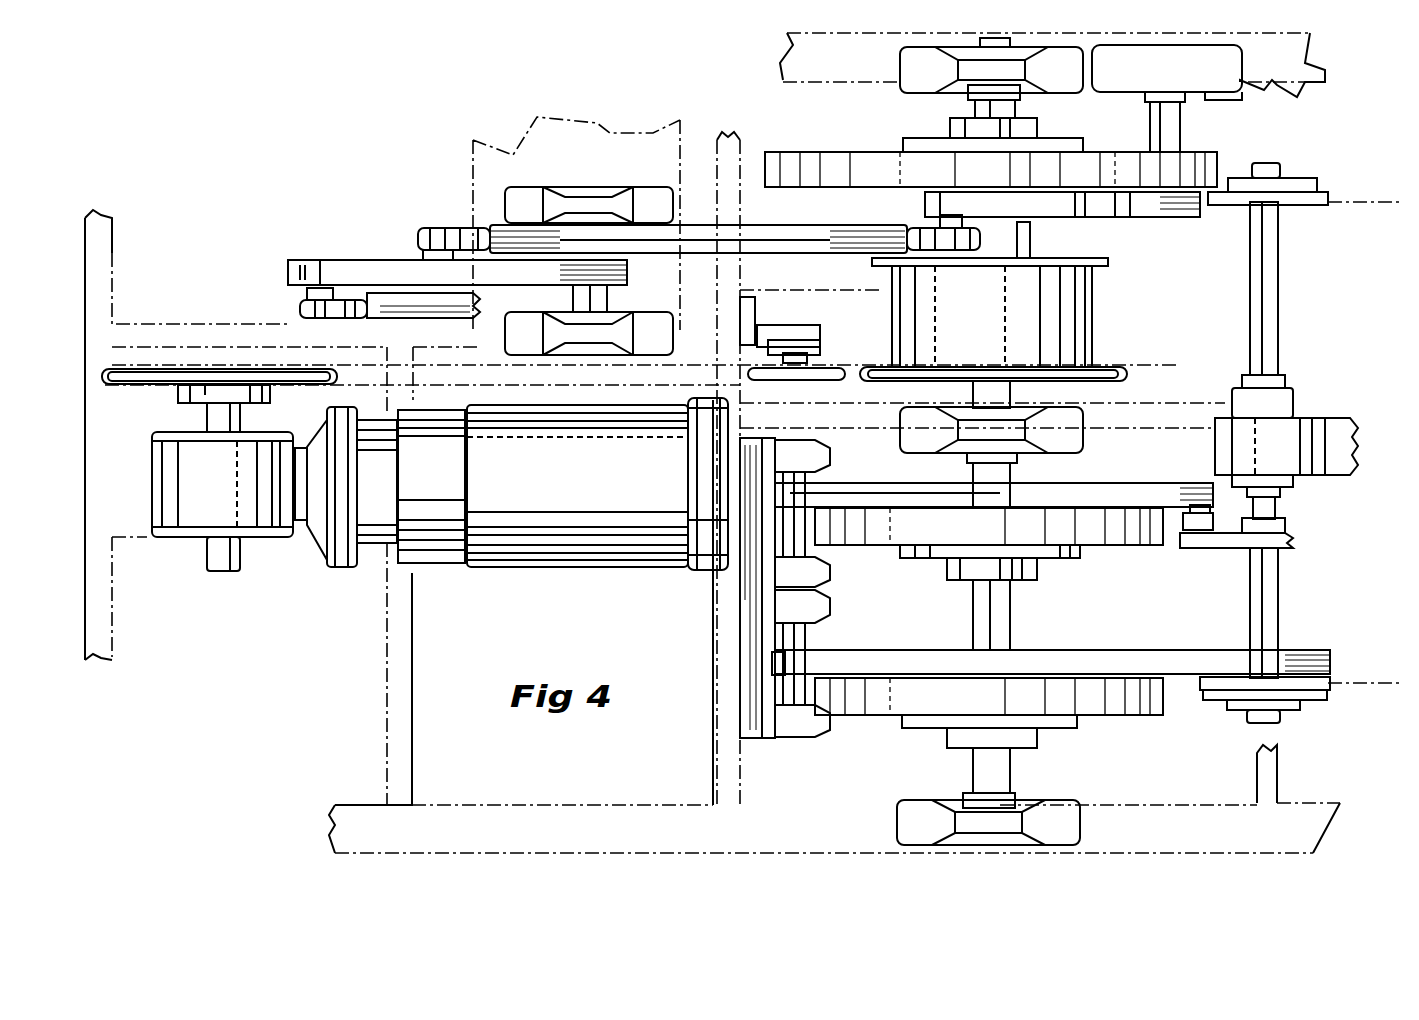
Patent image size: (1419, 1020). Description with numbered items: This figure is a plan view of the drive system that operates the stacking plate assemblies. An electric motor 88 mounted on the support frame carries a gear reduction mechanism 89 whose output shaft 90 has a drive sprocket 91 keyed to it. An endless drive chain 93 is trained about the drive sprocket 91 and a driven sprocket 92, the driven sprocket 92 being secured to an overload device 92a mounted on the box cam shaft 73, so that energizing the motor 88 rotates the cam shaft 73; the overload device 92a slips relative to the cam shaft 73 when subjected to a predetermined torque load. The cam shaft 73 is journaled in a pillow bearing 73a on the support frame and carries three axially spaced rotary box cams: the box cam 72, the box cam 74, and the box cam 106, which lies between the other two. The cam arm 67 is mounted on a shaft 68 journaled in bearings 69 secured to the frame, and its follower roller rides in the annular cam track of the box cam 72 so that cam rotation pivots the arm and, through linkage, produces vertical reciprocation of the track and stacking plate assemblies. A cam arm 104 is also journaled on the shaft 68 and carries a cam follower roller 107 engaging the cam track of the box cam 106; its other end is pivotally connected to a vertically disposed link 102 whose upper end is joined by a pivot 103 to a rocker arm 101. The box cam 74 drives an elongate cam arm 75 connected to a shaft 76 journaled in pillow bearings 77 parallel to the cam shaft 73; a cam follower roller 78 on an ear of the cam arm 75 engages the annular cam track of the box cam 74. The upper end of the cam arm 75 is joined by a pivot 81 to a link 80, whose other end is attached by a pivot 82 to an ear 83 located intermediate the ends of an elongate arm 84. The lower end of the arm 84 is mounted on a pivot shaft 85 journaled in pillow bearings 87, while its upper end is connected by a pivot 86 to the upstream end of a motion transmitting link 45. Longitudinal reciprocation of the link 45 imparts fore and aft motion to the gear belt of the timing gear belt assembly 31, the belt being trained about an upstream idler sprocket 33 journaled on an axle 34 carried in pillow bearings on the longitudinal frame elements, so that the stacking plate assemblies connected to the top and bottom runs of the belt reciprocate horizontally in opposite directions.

The timing gear belt assembly 31 is at (1328, 415).
The upstream idler sprocket 33 is at (1307, 477).
The axle 34 is at (1250, 333).
The motion transmitting link 45 is at (450, 310).
The cam arm 67 is at (1160, 613).
The shaft 68 is at (805, 630).
The bearings 69 is at (820, 448).
The rotary box cam 72 is at (1115, 715).
The box cam shaft 73 is at (973, 112).
The pillow bearing 73a is at (907, 85).
The rotary box cam 74 is at (798, 152).
The cam arm 75 is at (1050, 215).
The shaft 76 is at (1183, 130).
The pillow bearings 77 is at (1123, 92).
The cam follower roller 78 is at (1103, 197).
The link 80 is at (850, 228).
The pivot 81 is at (947, 250).
The pivot 82 is at (448, 227).
The ear 83 is at (423, 255).
The arm 84 is at (327, 262).
The pivot shaft 85 is at (318, 310).
The pivot 86 is at (605, 148).
The pillow bearings 87 is at (553, 355).
The electric motor 88 is at (580, 562).
The gear reduction mechanism 89 is at (267, 537).
The output shaft 90 is at (217, 573).
The drive sprocket 91 is at (152, 384).
The driven sprocket 92 is at (1103, 372).
The overload device 92a is at (890, 325).
The endless drive chain 93 is at (643, 387).
The rocker arm 101 is at (1293, 545).
The link 102 is at (1215, 517).
The pivot 103 is at (1195, 548).
The cam arm 104 is at (1163, 473).
The rotary box cam 106 is at (1087, 560).
The cam follower roller 107 is at (1105, 545).